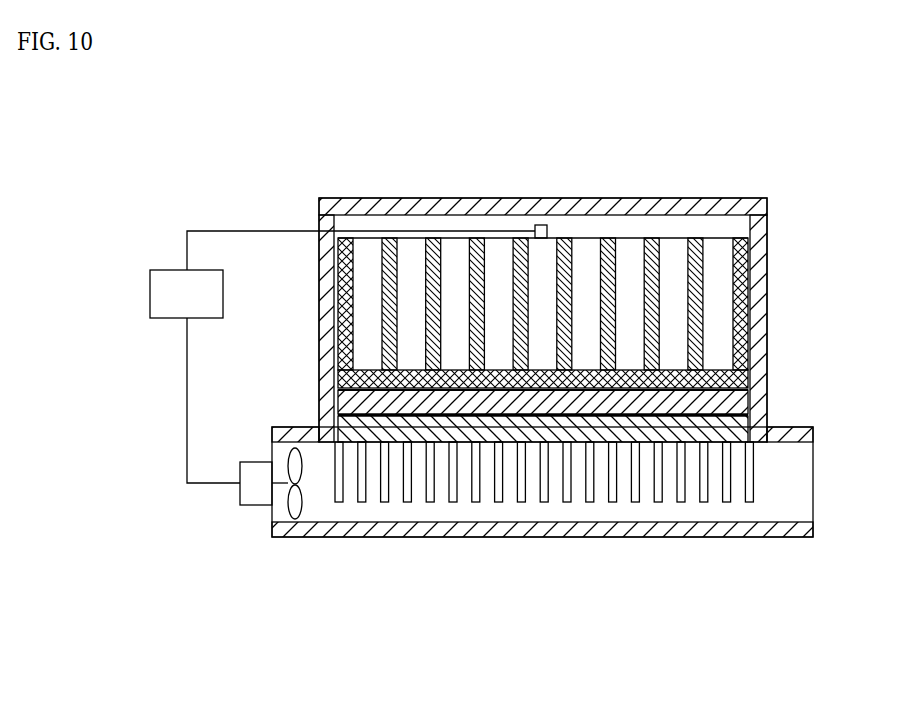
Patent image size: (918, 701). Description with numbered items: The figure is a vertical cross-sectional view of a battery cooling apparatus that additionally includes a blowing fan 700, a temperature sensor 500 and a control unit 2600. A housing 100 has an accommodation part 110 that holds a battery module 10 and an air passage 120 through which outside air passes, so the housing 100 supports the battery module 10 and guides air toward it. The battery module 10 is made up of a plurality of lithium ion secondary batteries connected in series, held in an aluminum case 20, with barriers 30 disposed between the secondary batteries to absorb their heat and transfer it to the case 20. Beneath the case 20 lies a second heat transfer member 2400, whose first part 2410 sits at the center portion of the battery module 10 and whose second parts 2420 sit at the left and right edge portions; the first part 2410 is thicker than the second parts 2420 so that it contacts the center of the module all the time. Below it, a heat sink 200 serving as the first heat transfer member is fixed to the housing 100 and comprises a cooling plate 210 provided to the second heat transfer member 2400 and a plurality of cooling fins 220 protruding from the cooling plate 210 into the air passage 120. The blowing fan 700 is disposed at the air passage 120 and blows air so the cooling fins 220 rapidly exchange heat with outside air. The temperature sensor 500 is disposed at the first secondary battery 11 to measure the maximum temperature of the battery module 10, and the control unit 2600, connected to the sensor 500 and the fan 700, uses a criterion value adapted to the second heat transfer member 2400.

The housing 100 is at (730, 193).
The accommodation part 110 is at (765, 296).
The air passage 120 is at (803, 479).
The battery module 10 is at (682, 228).
The first secondary battery 11 is at (545, 273).
The barrier 30 is at (397, 334).
The case 20 is at (345, 385).
The second heat transfer member 2400 is at (492, 533).
The first part 2410 is at (560, 405).
The second part 2420 is at (475, 400).
The heat sink 200 is at (544, 546).
The cooling plate 210 is at (403, 425).
The cooling fin 220 is at (457, 499).
The blowing fan 700 is at (281, 518).
The temperature sensor 500 is at (541, 225).
The control unit 2600 is at (150, 292).